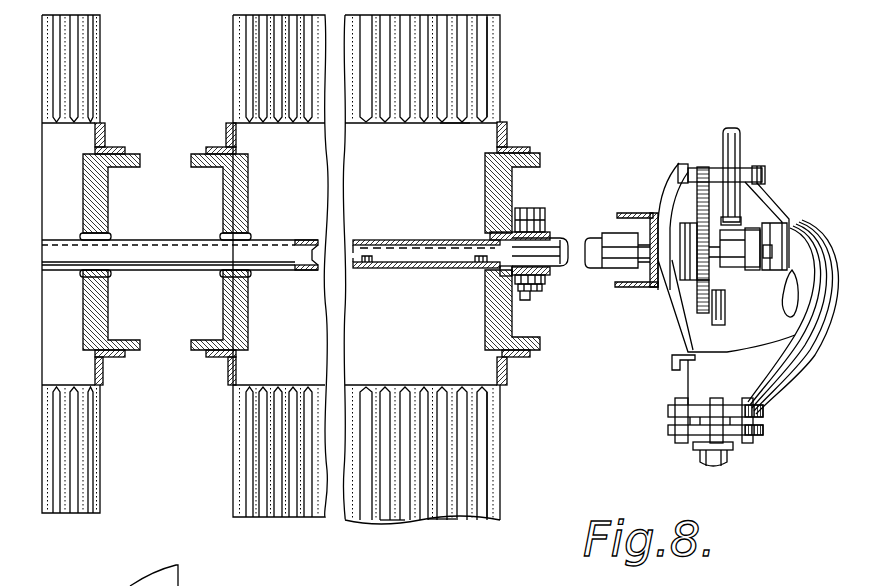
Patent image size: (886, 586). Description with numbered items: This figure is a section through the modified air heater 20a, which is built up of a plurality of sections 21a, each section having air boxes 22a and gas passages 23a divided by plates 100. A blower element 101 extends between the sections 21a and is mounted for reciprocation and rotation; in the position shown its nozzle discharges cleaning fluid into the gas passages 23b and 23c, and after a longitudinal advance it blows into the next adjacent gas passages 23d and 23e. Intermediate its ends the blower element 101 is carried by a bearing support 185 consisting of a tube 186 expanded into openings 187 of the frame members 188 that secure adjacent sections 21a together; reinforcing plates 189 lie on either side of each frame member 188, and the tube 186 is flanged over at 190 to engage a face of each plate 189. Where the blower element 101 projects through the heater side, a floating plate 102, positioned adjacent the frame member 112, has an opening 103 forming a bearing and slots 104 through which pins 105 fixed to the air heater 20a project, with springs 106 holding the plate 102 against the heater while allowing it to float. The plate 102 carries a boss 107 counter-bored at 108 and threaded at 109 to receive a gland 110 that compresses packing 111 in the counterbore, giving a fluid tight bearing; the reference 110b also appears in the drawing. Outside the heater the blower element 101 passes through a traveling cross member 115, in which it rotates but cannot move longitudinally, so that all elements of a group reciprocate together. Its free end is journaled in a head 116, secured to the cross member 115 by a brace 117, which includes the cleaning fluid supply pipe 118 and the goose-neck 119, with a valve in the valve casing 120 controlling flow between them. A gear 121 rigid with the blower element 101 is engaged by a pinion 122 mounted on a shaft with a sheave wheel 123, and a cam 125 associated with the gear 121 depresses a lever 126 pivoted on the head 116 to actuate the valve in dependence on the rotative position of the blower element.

The plate 100 is at (290, 123).
The bearing support 185 is at (153, 233).
The opening 187 is at (222, 285).
The tube 186 is at (167, 277).
The reinforcing plate 189 is at (234, 298).
The frame member 188 is at (222, 327).
The flange 190 is at (252, 275).
The gland 110 is at (68, 275).
The section 21a is at (487, 81).
The air heater 20a is at (492, 436).
The gas passage 23c is at (481, 102).
The gas passage 23e is at (458, 123).
The gas passage 23b is at (485, 399).
The gas passage 23a is at (402, 523).
The air box 22a is at (453, 520).
The plate 102 is at (527, 212).
The frame member 112 is at (503, 323).
The gas passage 23d is at (460, 386).
The blower element 101 is at (383, 238).
The shaft key 110b is at (482, 266).
The head 116 is at (792, 167).
The packing 111 is at (556, 256).
The opening 103 is at (527, 221).
The boss 107 is at (517, 235).
The threaded portion 109 is at (550, 271).
The counter-bored portion 108 is at (513, 278).
The pin 105 is at (547, 284).
The spring 106 is at (542, 294).
The slot 104 is at (522, 300).
The cross member 115 is at (632, 212).
The brace 117 is at (657, 218).
The pinion 122 is at (701, 166).
The gear 121 is at (700, 288).
The sheave wheel 123 is at (738, 142).
The cam 125 is at (711, 277).
The lever 126 is at (714, 300).
The valve casing 120 is at (702, 378).
The goose-neck 119 is at (793, 332).
The cleaning fluid supply pipe 118 is at (733, 460).